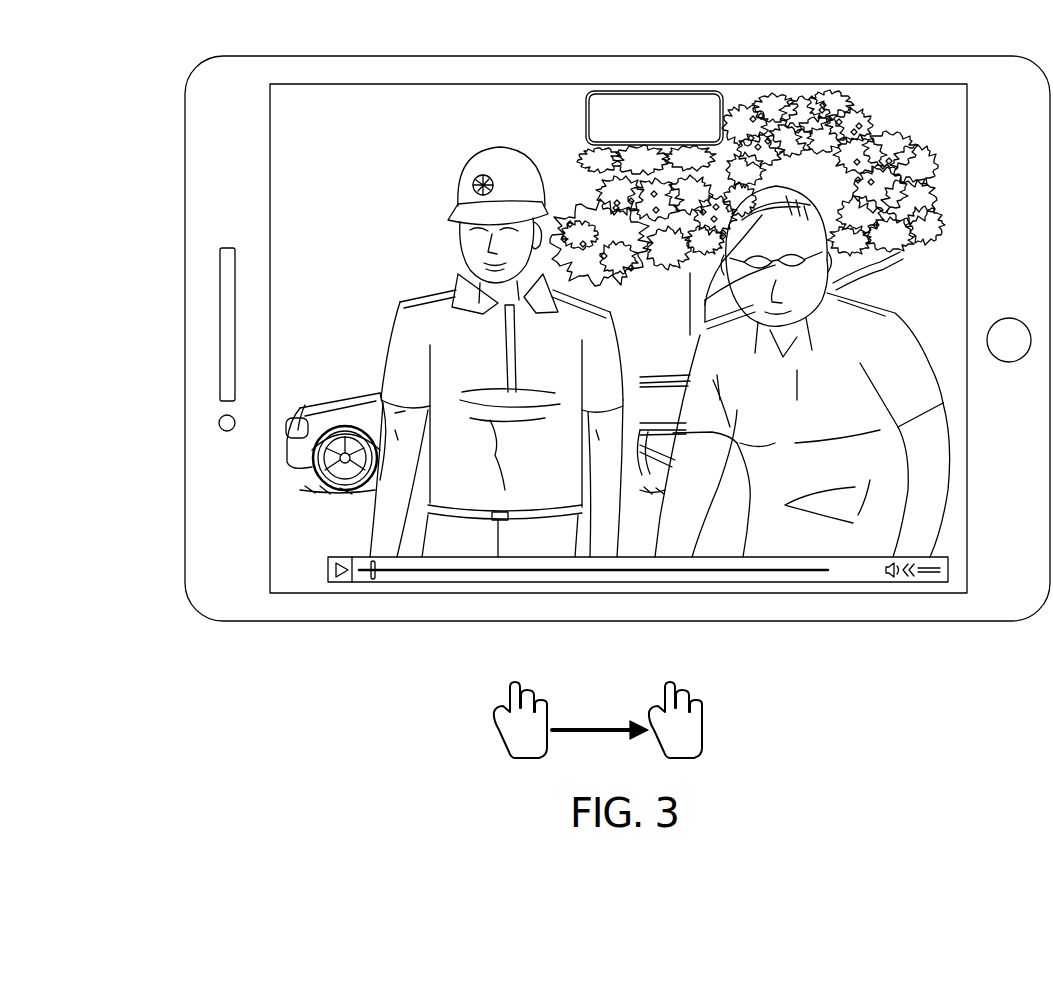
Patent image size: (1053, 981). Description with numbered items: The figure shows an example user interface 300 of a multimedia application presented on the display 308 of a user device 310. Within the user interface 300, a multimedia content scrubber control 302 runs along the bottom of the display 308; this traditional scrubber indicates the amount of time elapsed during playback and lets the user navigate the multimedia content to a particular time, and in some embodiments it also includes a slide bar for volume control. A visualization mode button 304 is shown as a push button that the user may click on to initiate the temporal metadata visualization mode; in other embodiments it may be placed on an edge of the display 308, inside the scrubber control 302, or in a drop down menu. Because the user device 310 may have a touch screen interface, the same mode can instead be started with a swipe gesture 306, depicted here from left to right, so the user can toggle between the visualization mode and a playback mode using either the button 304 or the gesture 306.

The user interface 300 is at (162, 69).
The multimedia content scrubber control 302 is at (415, 575).
The visualization mode button 304 is at (598, 91).
The swipe gesture 306 is at (484, 731).
The display 308 is at (970, 131).
The user device 310 is at (184, 238).